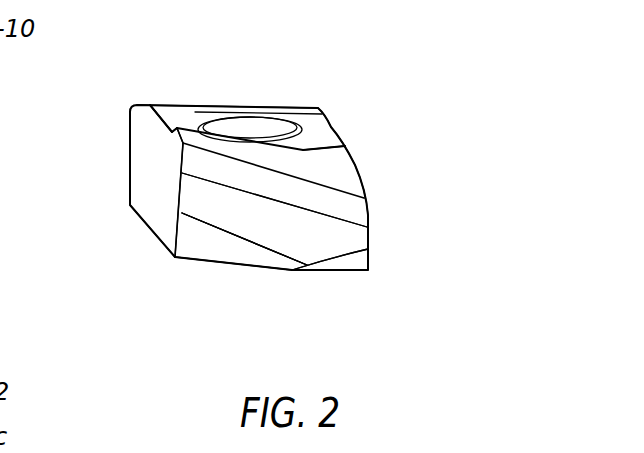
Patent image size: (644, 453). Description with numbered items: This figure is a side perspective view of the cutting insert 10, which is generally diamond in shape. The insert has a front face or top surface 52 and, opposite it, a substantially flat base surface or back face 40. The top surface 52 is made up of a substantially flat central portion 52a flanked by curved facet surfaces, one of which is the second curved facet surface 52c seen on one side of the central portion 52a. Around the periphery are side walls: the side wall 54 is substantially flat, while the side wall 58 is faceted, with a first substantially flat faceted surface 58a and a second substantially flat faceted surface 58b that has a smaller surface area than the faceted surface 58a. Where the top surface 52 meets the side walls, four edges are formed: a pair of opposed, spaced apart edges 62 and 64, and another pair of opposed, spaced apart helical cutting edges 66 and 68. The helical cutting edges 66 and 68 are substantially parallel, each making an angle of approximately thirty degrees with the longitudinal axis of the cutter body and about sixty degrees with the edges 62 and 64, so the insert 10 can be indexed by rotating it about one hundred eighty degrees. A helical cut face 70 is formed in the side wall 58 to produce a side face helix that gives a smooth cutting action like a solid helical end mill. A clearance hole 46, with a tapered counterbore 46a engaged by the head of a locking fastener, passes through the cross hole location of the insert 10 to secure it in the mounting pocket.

The cutting insert 10 is at (29, 75).
The base surface or back face 40 is at (252, 276).
The clearance hole 46 is at (260, 125).
The tapered counterbore 46a is at (293, 123).
The top surface 52 is at (174, 114).
The central portion 52a is at (160, 112).
The second curved facet surface 52c is at (353, 187).
The side wall 54 is at (142, 179).
The side wall 58 is at (300, 252).
The first faceted surface 58a is at (200, 247).
The second faceted surface 58b is at (350, 267).
The edge 62 is at (165, 124).
The edge 64 is at (343, 133).
The helical cutting edge 66 is at (205, 110).
The helical cutting edge 68 is at (330, 148).
The helical cut face 70 is at (195, 198).